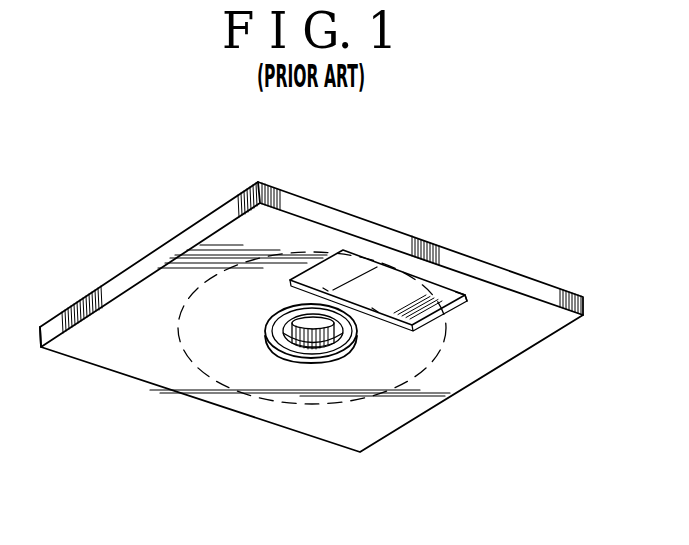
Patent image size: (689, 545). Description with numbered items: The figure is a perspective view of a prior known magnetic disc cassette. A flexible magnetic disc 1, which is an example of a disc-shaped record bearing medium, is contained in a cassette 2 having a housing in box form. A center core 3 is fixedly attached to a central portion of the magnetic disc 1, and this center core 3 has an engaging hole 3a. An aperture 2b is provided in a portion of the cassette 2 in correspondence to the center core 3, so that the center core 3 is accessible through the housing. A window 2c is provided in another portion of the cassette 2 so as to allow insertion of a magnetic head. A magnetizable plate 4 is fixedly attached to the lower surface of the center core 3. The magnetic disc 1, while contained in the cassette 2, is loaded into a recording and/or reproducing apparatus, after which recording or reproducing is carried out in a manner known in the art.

The flexible magnetic disc 1 is at (410, 290).
The cassette 2 is at (322, 218).
The aperture 2b is at (343, 347).
The window 2c is at (462, 300).
The center core 3 is at (342, 310).
The engaging hole 3a is at (337, 330).
The magnetizable plate 4 is at (268, 347).